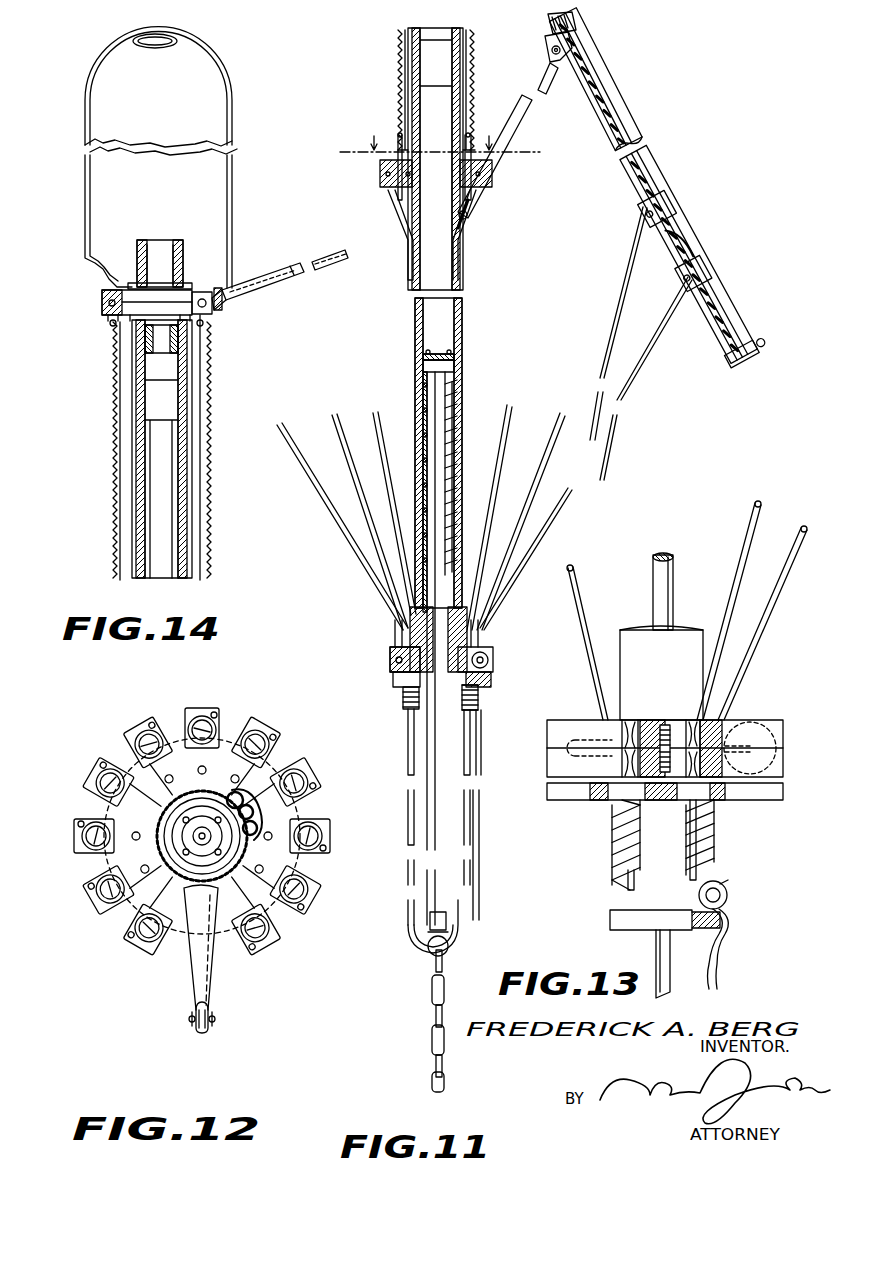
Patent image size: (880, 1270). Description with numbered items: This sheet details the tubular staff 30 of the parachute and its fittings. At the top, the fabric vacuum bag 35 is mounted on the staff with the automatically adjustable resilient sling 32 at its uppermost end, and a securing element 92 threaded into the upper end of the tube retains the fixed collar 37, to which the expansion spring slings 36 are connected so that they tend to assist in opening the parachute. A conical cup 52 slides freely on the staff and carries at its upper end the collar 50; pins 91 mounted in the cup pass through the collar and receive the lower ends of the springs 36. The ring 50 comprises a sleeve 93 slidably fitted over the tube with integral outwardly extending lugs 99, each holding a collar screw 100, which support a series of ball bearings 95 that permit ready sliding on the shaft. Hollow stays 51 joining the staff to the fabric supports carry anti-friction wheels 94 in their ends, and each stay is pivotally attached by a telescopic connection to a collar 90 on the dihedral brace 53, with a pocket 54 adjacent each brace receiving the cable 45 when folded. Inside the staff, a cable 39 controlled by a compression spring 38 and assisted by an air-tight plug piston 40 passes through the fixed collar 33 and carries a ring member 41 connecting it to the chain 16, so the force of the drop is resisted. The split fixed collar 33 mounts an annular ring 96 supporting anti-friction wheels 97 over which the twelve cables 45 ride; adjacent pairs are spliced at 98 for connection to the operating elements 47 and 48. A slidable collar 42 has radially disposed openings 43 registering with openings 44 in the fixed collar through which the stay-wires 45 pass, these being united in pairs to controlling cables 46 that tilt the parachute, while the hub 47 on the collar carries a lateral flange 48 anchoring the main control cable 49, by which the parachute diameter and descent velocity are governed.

In FIG. 11, the chain 16 is at (432, 1034).
In FIG. 14, the tubular staff 30 is at (168, 520).
In FIG. 11, the tubular staff 30 is at (412, 312).
In FIG. 12, the tubular staff 30 is at (190, 792).
In FIG. 14, the resilient sling 32 is at (170, 52).
In FIG. 11, the fixed collar 33 is at (490, 654).
In FIG. 13, the fixed collar 33 is at (547, 770).
In FIG. 14, the vacuum bag 35 is at (98, 200).
In FIG. 14, the expansion spring slings 36 is at (112, 448).
In FIG. 11, the expansion spring slings 36 is at (398, 88).
In FIG. 14, the fixed collar 37 is at (214, 312).
In FIG. 11, the compression spring 38 is at (458, 392).
In FIG. 11, the cable 39 is at (432, 418).
In FIG. 11, the plug piston 40 is at (452, 362).
In FIG. 12, the plug piston 40 is at (185, 845).
In FIG. 11, the ring member 41 is at (452, 950).
In FIG. 11, the slidable collar 42 is at (398, 680).
In FIG. 13, the slidable collar 42 is at (780, 790).
In FIG. 13, the radially disposed openings 43 is at (686, 800).
In FIG. 13, the openings 44 is at (695, 722).
In FIG. 11, the cables 45 is at (322, 512).
In FIG. 13, the cables 45 is at (572, 568).
In FIG. 11, the controlling cables 46 is at (482, 875).
In FIG. 13, the hub 47 is at (648, 884).
In FIG. 11, the lateral flange 48 is at (420, 730).
In FIG. 13, the lateral flange 48 is at (618, 915).
In FIG. 11, the main control cable 49 is at (470, 760).
In FIG. 13, the main control cable 49 is at (722, 960).
In FIG. 11, the collar 50 is at (382, 175).
In FIG. 12, the collar 50 is at (312, 910).
In FIG. 11, the stays 51 is at (525, 120).
In FIG. 12, the stays 51 is at (212, 958).
In FIG. 11, the conical cup 52 is at (400, 232).
In FIG. 14, the dihedral braces 53 is at (282, 268).
In FIG. 11, the dihedral braces 53 is at (632, 118).
In FIG. 11, the pocket 54 is at (658, 178).
In FIG. 11, the collar 90 is at (575, 40).
In FIG. 11, the pins 91 is at (380, 178).
In FIG. 14, the securing element 92 is at (150, 253).
In FIG. 14, the sleeve 93 is at (192, 475).
In FIG. 11, the sleeve 93 is at (470, 98).
In FIG. 12, the sleeve 93 is at (160, 820).
In FIG. 11, the anti-friction wheels 94 is at (472, 217).
In FIG. 12, the anti-friction wheels 94 is at (250, 880).
In FIG. 11, the ball bearings 95 is at (492, 182).
In FIG. 12, the ball bearings 95 is at (256, 810).
In FIG. 13, the annular ring 96 is at (578, 740).
In FIG. 12, the annular ring 96 is at (318, 840).
In FIG. 11, the anti-friction wheels 97 is at (490, 660).
In FIG. 13, the anti-friction wheels 97 is at (755, 726).
In FIG. 13, the splice 98 is at (714, 852).
In FIG. 12, the lugs 99 is at (208, 740).
In FIG. 12, the collar screw 100 is at (122, 915).